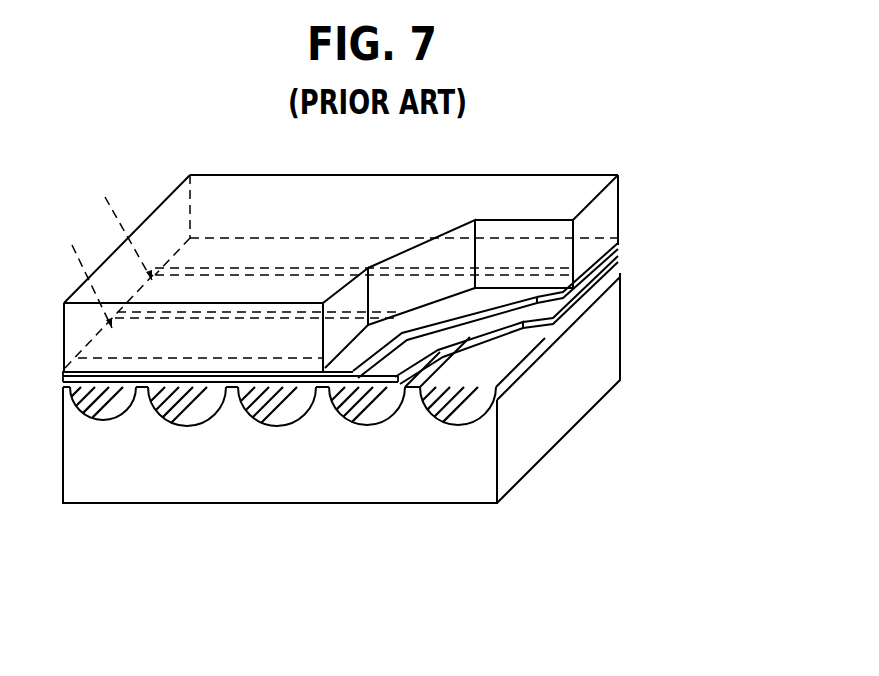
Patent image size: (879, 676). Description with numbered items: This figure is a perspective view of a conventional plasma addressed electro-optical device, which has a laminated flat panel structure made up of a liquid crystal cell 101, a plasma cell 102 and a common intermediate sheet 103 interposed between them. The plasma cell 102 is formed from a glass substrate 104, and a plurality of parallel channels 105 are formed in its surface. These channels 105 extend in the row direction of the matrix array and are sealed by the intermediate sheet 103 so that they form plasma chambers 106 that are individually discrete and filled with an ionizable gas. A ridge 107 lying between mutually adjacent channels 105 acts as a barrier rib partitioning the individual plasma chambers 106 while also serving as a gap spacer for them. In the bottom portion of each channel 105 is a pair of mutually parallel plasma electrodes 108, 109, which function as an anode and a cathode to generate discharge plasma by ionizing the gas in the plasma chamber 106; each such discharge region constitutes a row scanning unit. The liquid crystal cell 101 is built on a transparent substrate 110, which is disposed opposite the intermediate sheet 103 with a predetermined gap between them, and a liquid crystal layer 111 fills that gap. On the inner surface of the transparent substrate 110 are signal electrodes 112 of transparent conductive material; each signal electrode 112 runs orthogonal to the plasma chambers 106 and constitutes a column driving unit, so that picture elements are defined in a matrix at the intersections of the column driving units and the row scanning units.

The liquid crystal cell 101 is at (632, 176).
The plasma cell 102 is at (628, 308).
The intermediate sheet 103 is at (620, 262).
The glass substrate 104 is at (620, 357).
The channels 105 is at (368, 415).
The plasma chambers 106 is at (100, 402).
The ridge 107 is at (323, 402).
The plasma electrode 108 is at (162, 408).
The plasma electrode 109 is at (207, 408).
The transparent substrate 110 is at (603, 208).
The liquid crystal layer 111 is at (622, 245).
The signal electrodes 112 is at (102, 247).